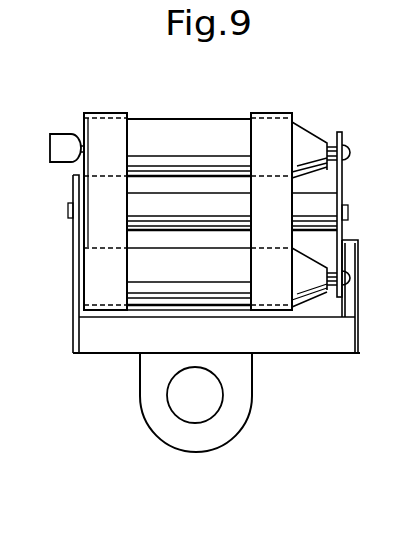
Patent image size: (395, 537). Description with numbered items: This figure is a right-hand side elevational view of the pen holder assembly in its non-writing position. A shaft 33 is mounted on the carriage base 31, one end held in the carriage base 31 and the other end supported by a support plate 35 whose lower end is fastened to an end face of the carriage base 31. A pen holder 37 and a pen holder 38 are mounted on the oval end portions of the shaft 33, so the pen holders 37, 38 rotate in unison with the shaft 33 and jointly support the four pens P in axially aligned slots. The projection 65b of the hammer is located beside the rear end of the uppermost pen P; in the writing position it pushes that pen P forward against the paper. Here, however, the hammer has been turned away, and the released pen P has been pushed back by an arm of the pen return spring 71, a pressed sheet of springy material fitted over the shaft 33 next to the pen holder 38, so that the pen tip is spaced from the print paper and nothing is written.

The carriage base 31 is at (312, 343).
The shaft 33 is at (137, 212).
The support plate 35 is at (362, 263).
The pen holder 37 is at (110, 113).
The pen holder 38 is at (272, 113).
The projection 65b is at (68, 147).
The pen return spring 71 is at (342, 171).
The pen P is at (185, 132).